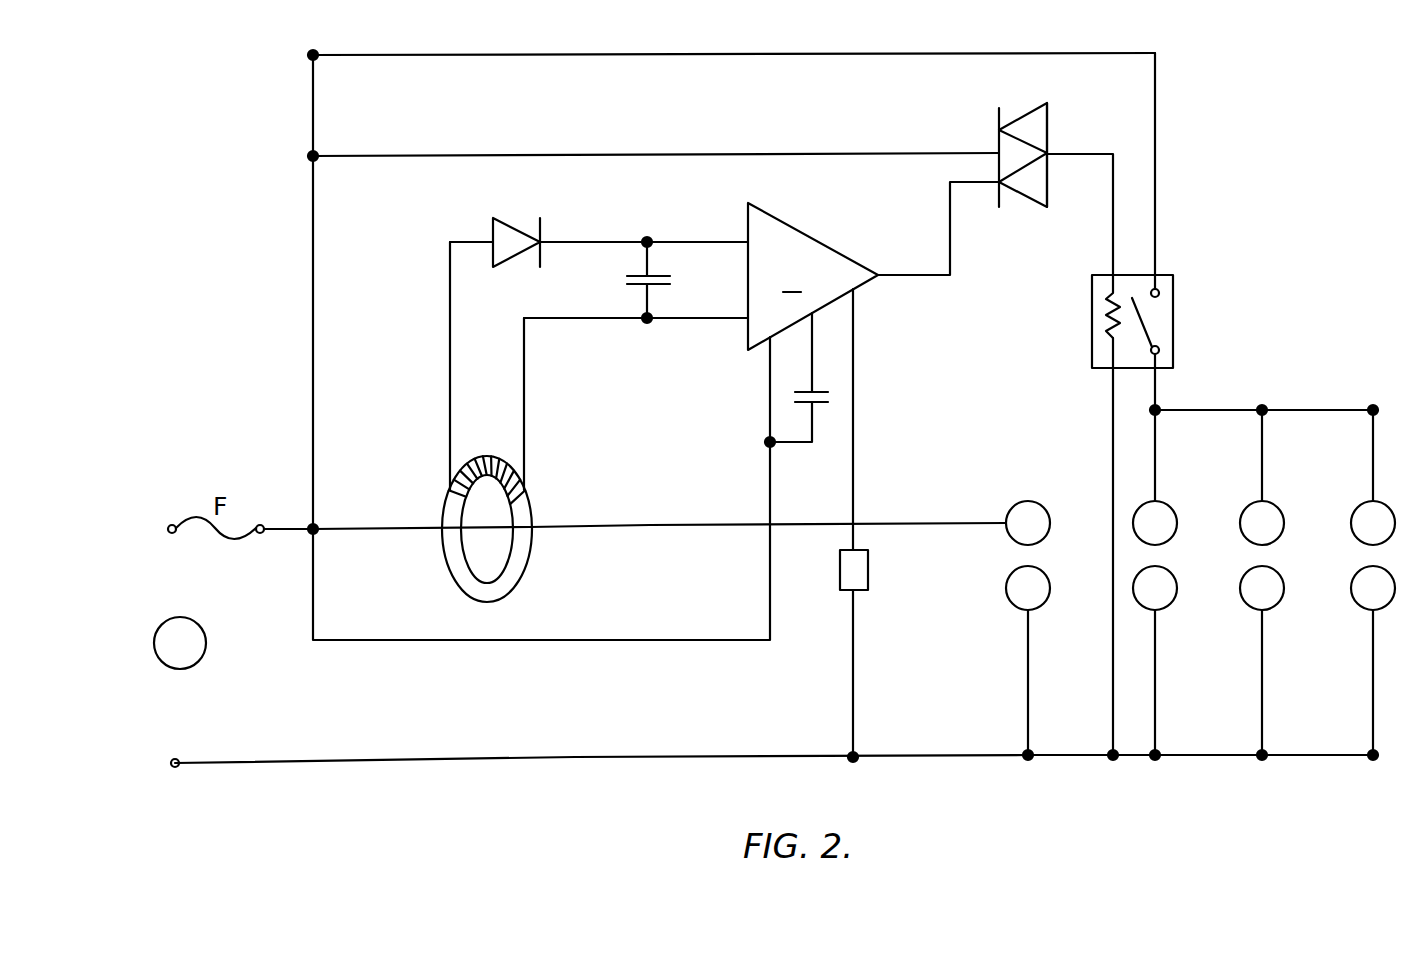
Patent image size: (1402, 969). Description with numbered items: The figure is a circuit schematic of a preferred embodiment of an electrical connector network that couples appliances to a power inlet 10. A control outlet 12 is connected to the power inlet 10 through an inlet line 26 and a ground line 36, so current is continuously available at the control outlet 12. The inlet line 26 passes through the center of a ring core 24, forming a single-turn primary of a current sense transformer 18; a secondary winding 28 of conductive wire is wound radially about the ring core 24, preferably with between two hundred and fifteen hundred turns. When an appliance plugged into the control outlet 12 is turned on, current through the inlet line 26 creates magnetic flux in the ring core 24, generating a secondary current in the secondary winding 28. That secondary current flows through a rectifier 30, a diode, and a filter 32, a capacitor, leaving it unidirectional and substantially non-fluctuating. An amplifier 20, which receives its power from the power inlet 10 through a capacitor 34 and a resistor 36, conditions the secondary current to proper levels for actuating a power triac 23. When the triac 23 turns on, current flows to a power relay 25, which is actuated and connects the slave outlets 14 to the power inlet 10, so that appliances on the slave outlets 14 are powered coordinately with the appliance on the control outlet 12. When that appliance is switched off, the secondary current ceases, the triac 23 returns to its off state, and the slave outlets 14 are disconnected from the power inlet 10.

The power inlet 10 is at (125, 535).
The control outlet 12 is at (1089, 570).
The slave outlet 14 is at (1247, 508).
The current sense transformer 18 is at (582, 510).
The amplifier 20 is at (830, 228).
The power triac 23 is at (1047, 152).
The ring core 24 is at (446, 564).
The power relay 25 is at (1173, 340).
The inlet line 26 is at (648, 526).
The secondary winding 28 is at (478, 450).
The rectifier 30 is at (503, 265).
The filter 32 is at (670, 280).
The capacitor 34 is at (803, 390).
The resistor 36 is at (868, 583).